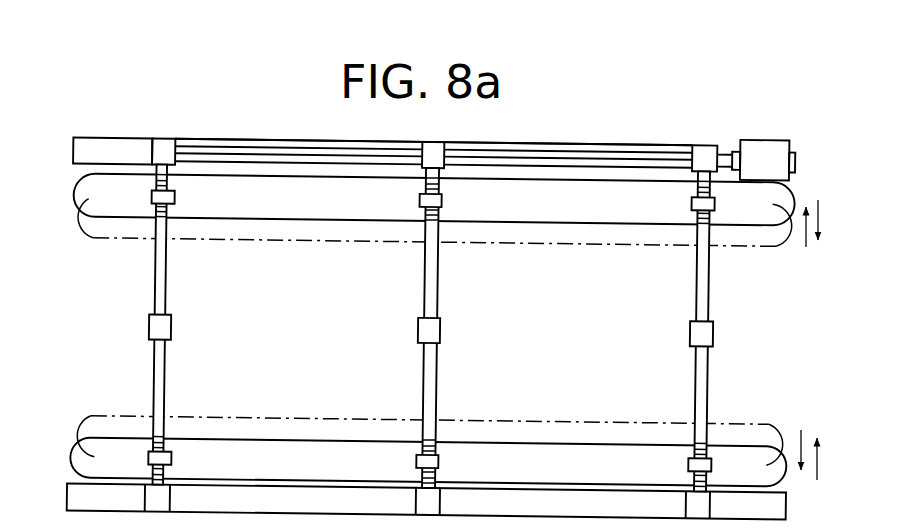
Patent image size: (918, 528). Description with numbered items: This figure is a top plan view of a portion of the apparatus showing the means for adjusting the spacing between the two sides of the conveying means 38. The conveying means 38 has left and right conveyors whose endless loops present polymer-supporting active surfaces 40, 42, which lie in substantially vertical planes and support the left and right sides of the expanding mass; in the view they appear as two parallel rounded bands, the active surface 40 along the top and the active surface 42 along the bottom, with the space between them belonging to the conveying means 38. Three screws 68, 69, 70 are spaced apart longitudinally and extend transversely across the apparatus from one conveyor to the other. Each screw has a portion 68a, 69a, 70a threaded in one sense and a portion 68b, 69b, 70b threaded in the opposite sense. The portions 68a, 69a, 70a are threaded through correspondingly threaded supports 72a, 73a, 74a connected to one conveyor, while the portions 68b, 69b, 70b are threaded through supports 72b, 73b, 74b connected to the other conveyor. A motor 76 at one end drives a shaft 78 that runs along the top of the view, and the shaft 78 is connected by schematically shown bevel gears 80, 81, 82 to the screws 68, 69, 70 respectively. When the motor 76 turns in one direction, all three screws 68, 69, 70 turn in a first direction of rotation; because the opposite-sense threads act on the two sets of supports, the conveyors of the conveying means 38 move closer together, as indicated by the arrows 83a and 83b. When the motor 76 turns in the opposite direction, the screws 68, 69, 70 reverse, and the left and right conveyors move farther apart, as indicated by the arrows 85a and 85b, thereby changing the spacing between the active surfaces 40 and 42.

The conveying means 38 is at (278, 285).
The active surface 40 is at (297, 232).
The active surface 42 is at (578, 438).
The screw 68 is at (152, 296).
The portion threaded in one sense 68a is at (166, 214).
The portion threaded in the opposite sense 68b is at (165, 438).
The screw 69 is at (440, 302).
The portion threaded in one sense 69a is at (437, 215).
The portion threaded in the opposite sense 69b is at (435, 443).
The screw 70 is at (694, 297).
The portion threaded in one sense 70a is at (698, 222).
The portion threaded in the opposite sense 70b is at (697, 445).
The threaded support 72a is at (150, 198).
The threaded support 72b is at (150, 459).
The threaded support 73a is at (418, 199).
The threaded support 73b is at (440, 462).
The threaded support 74a is at (690, 201).
The threaded support 74b is at (690, 462).
The motor 76 is at (761, 141).
The shaft 78 is at (566, 150).
The bevel gear 80 is at (168, 146).
The bevel gear 81 is at (440, 150).
The bevel gear 82 is at (700, 146).
The arrow 83a is at (818, 255).
The arrow 83b is at (817, 430).
The arrow 85a is at (809, 232).
The arrow 85b is at (802, 428).